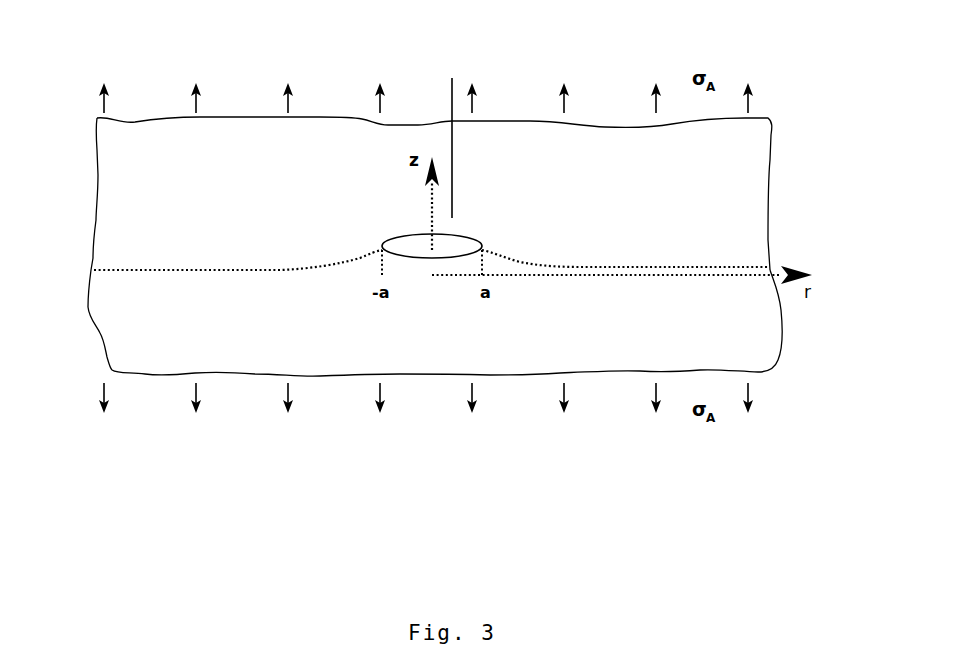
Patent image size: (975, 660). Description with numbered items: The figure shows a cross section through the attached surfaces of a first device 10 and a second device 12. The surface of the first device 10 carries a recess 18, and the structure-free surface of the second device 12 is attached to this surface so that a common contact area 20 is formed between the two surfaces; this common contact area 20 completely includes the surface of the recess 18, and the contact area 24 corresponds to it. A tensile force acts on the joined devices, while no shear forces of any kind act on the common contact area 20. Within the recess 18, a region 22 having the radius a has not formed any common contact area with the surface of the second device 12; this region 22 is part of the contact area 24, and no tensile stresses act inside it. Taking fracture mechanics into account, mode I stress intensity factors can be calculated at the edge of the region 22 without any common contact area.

The first device 10 is at (782, 195).
The second device 12 is at (800, 320).
The recess 18 is at (452, 128).
The common contact area 20 is at (148, 270).
The region without common contact area 22 is at (420, 247).
The contact area 24 is at (434, 431).